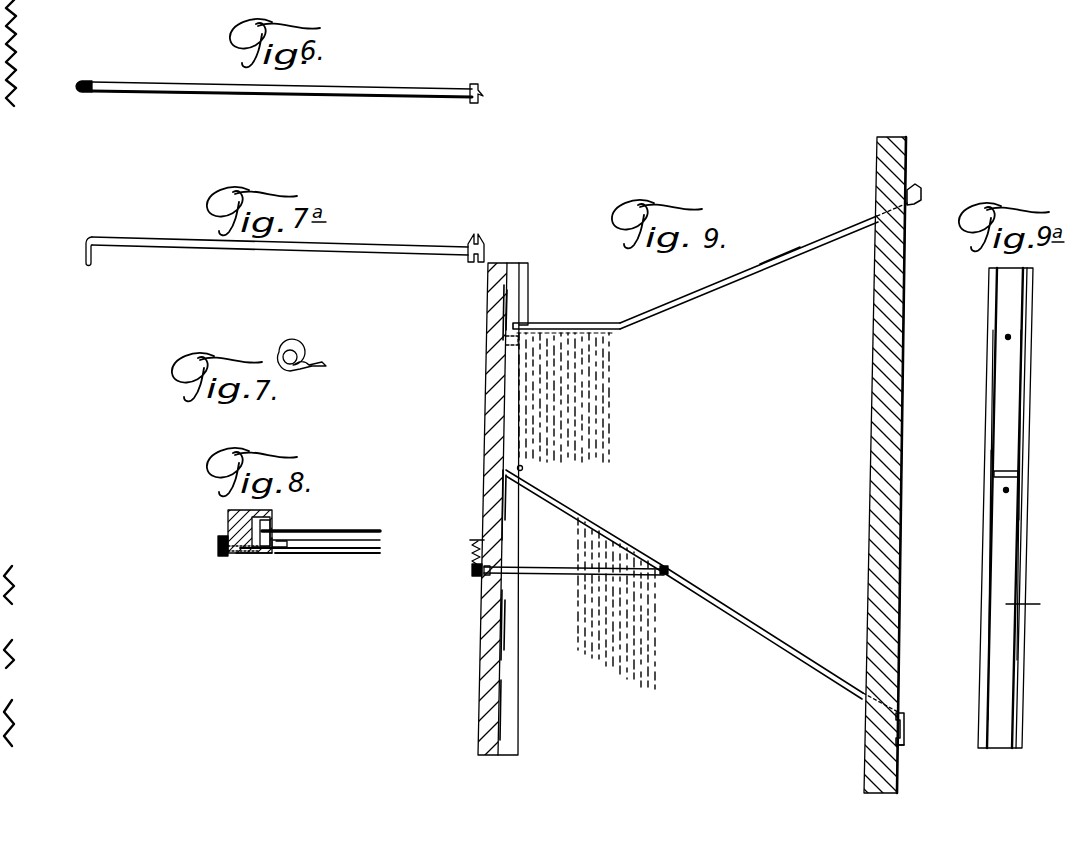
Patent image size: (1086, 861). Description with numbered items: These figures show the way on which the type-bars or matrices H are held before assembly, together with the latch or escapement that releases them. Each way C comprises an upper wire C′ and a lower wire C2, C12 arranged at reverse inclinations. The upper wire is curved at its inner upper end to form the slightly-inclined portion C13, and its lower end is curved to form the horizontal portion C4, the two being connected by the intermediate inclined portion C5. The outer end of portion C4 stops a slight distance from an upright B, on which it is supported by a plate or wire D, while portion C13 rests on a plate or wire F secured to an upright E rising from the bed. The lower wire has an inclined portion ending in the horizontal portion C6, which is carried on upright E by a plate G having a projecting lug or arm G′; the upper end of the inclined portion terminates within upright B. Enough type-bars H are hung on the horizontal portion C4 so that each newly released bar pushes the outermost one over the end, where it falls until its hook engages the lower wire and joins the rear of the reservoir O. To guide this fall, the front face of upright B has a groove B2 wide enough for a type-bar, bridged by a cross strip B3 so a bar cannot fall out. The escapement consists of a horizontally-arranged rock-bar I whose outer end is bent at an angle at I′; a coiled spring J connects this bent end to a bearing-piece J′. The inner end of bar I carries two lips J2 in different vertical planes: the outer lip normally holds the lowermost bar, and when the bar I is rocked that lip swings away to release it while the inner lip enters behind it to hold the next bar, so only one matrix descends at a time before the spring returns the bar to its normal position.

In FIG. 6, the horizontally-arranged bar I is at (372, 92).
In FIG. 7A, the horizontally-arranged bar I is at (366, 235).
In FIG. 9, the horizontally-arranged bar I is at (558, 578).
In FIG. 6, the bent outer end of bar I′ is at (82, 82).
In FIG. 7A, the bent outer end of bar I′ is at (78, 252).
In FIG. 8, the bent outer end of bar I′ is at (330, 553).
In FIG. 9, the bent outer end of bar I′ is at (474, 576).
In FIG. 6, the lips J2 is at (476, 86).
In FIG. 7A, the lips J2 is at (464, 234).
In FIG. 7, the lips J2 is at (314, 359).
In FIG. 8, the bearing-piece J′ is at (218, 546).
In FIG. 9, the bearing-piece J′ is at (475, 542).
In FIG. 9, the coiled spring J is at (472, 553).
In FIG. 9, the upright B is at (488, 418).
In FIG. 9A, the upright B is at (1024, 460).
In FIG. 8, the guideway or groove B2 is at (260, 524).
In FIG. 9A, the guideway or groove B2 is at (1035, 604).
In FIG. 8, the cross strip or bar B3 is at (272, 522).
In FIG. 9A, the cross strip or bar B3 is at (993, 474).
In FIG. 9, the way C is at (712, 413).
In FIG. 8, the upper wire C′ is at (321, 529).
In FIG. 9A, the upper wire C′ is at (1012, 337).
In FIG. 9A, the lower wire C2 is at (1010, 492).
In FIG. 9, the horizontal portion C4 is at (566, 311).
In FIG. 9, the intermediate inclined portion C5 is at (708, 300).
In FIG. 9, the horizontal portion of lower wire C6 is at (902, 716).
In FIG. 9, the lower wire C12 is at (632, 556).
In FIG. 9, the slightly-inclined portion C13 is at (920, 192).
In FIG. 8, the plate or wire D is at (254, 556).
In FIG. 9, the plate or wire D is at (516, 338).
In FIG. 9, the upright E is at (871, 412).
In FIG. 9, the plate or wire F is at (916, 206).
In FIG. 9, the plate G is at (905, 759).
In FIG. 9, the projecting lug or arm G′ is at (905, 740).
In FIG. 9, the type-bars or matrices H is at (608, 414).
In FIG. 9, the reservoir O is at (590, 522).